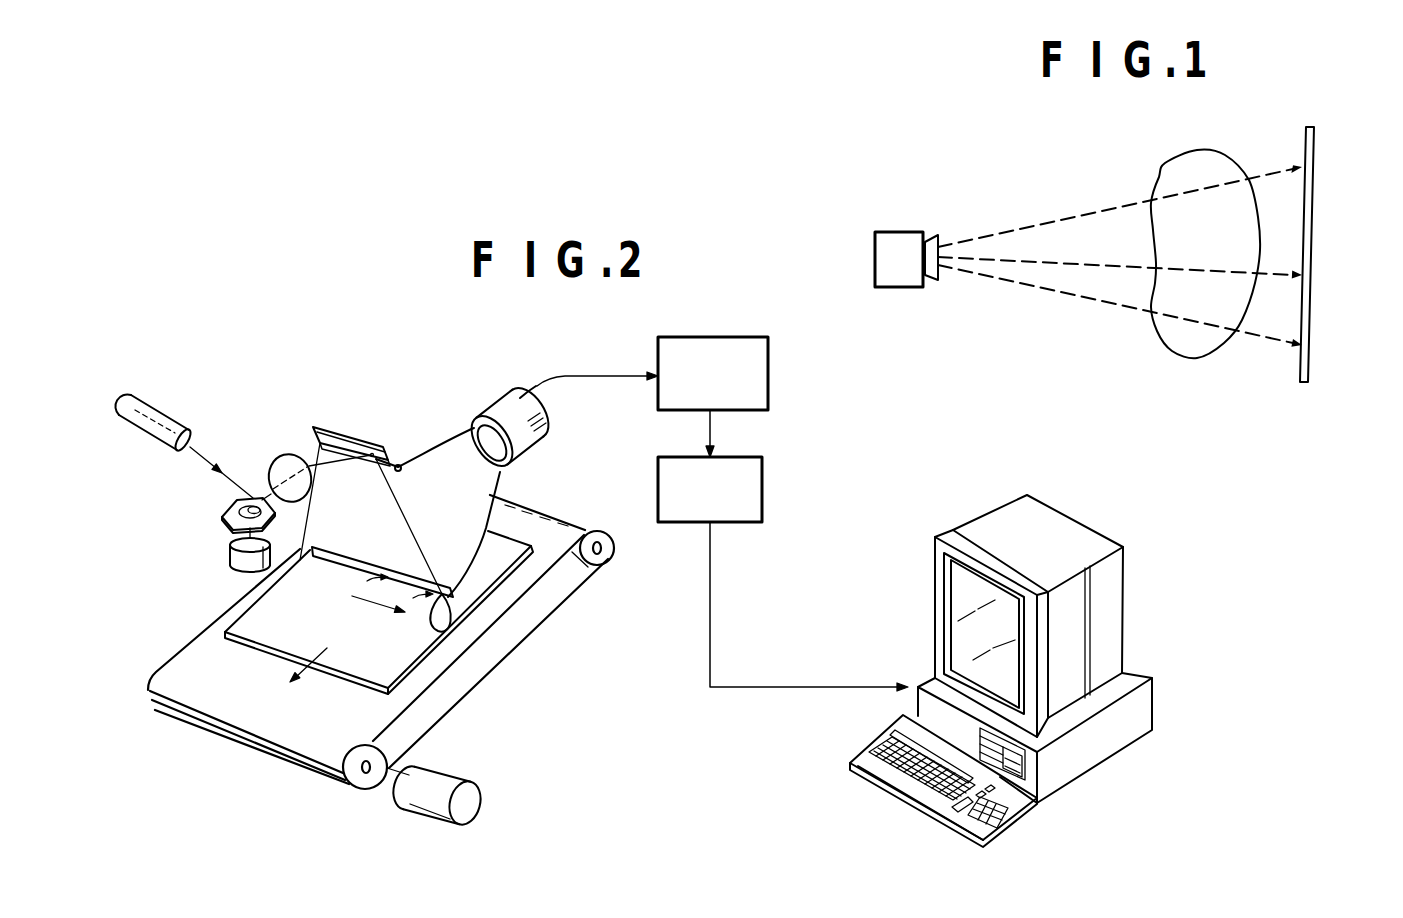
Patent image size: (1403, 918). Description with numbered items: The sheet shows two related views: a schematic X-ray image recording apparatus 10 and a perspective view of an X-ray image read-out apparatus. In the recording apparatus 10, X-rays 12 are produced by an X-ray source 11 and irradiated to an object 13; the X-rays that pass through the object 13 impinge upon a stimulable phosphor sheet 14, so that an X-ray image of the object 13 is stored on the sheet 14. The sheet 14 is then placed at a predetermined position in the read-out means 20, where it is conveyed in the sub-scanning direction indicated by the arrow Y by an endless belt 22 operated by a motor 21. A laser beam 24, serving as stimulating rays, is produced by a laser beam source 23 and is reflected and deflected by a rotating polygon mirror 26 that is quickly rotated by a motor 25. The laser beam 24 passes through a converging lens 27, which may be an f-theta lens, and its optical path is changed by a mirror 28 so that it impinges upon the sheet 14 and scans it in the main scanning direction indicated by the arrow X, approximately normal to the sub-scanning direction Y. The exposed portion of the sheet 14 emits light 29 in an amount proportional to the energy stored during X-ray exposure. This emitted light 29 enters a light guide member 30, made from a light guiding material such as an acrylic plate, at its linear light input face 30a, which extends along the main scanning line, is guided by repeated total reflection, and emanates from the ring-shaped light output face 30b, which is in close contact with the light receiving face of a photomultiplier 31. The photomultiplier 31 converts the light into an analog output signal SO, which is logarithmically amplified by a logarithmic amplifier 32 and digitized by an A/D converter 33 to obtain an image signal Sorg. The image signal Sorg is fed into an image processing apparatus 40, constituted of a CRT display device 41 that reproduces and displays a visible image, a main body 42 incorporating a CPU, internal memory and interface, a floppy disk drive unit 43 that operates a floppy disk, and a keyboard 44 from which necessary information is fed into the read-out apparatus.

In FIG. 1, the optical arrangement 10 is at (1105, 157).
In FIG. 1, the X-ray source 11 is at (902, 237).
In FIG. 1, the X-rays 12 is at (1073, 215).
In FIG. 1, the object 13 is at (1203, 163).
In FIG. 1, the stimulable phosphor sheet 14 is at (1318, 137).
In FIG. 2, the stimulable phosphor sheet 14 is at (480, 684).
In FIG. 2, the read-out means 20 is at (347, 407).
In FIG. 2, the motor 21 is at (446, 774).
In FIG. 2, the endless belt 22 is at (437, 720).
In FIG. 2, the laser beam source 23 is at (158, 414).
In FIG. 2, the laser beam 24 is at (207, 457).
In FIG. 2, the motor 25 is at (228, 558).
In FIG. 2, the rotating polygon mirror 26 is at (223, 511).
In FIG. 2, the converging lens 27 is at (277, 457).
In FIG. 2, the mirror 28 is at (370, 438).
In FIG. 2, the emitted light 29 is at (336, 560).
In FIG. 2, the light guide member 30 is at (438, 470).
In FIG. 2, the light input face 30a is at (455, 625).
In FIG. 2, the light output face 30b is at (513, 473).
In FIG. 2, the photomultiplier 31 is at (500, 395).
In FIG. 2, the logarithmic amplifier 32 is at (752, 338).
In FIG. 2, the A/D converter 33 is at (763, 459).
In FIG. 2, the image processing apparatus 40 is at (1117, 496).
In FIG. 2, the CRT display device 41 is at (973, 553).
In FIG. 2, the main body 42 is at (1138, 710).
In FIG. 2, the floppy disk drive unit 43 is at (1027, 757).
In FIG. 2, the keyboard 44 is at (862, 768).
In FIG. 2, the analog output signal SO is at (600, 374).
In FIG. 2, the image signal Sorg is at (713, 570).
In FIG. 2, the main scanning direction X is at (378, 614).
In FIG. 2, the sub-scanning direction Y is at (301, 678).